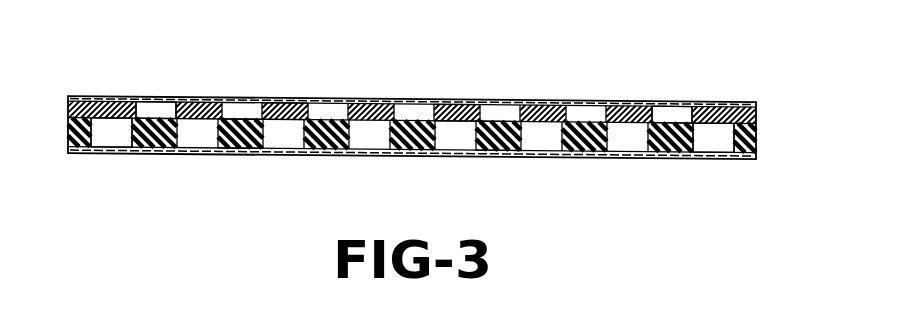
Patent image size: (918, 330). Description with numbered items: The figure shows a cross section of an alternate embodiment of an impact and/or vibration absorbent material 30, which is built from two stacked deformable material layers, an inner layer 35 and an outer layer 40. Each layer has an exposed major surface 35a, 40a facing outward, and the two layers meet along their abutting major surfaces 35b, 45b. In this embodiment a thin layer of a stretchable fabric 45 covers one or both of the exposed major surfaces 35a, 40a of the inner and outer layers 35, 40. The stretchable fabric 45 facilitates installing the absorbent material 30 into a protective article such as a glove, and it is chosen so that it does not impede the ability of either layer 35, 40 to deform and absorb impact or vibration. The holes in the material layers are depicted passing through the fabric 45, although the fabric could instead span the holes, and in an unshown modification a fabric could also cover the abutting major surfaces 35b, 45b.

The impact and/or vibration absorbent material 30 is at (770, 112).
The inner layer 35 is at (468, 105).
The exposed major surface of the inner layer 35a is at (713, 126).
The abutting major surface of the inner layer 35b is at (672, 113).
The outer layer 40 is at (508, 151).
The exposed major surface of the outer layer 40a is at (152, 122).
The stretchable fabric 45 is at (300, 105).
The abutting major surface of the outer layer 45b is at (108, 118).